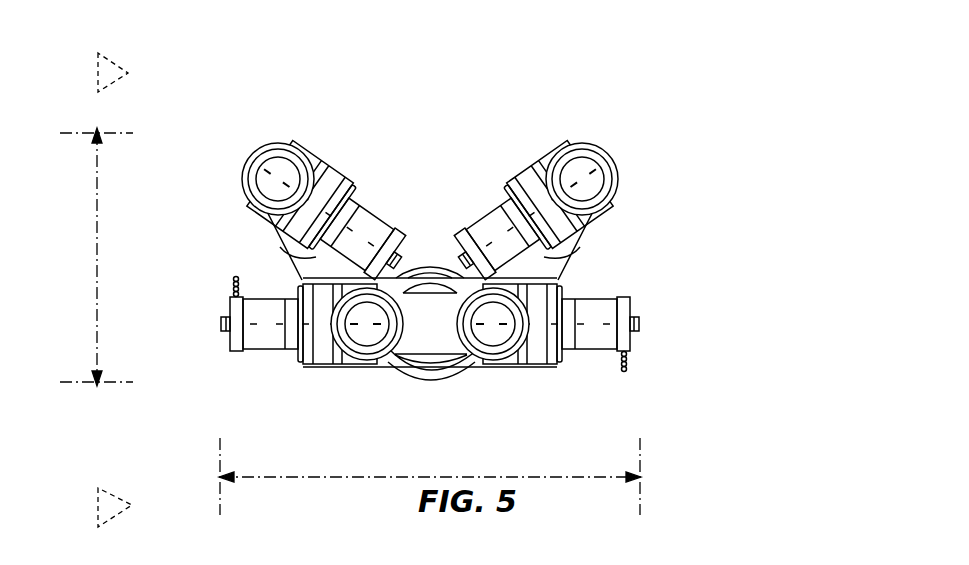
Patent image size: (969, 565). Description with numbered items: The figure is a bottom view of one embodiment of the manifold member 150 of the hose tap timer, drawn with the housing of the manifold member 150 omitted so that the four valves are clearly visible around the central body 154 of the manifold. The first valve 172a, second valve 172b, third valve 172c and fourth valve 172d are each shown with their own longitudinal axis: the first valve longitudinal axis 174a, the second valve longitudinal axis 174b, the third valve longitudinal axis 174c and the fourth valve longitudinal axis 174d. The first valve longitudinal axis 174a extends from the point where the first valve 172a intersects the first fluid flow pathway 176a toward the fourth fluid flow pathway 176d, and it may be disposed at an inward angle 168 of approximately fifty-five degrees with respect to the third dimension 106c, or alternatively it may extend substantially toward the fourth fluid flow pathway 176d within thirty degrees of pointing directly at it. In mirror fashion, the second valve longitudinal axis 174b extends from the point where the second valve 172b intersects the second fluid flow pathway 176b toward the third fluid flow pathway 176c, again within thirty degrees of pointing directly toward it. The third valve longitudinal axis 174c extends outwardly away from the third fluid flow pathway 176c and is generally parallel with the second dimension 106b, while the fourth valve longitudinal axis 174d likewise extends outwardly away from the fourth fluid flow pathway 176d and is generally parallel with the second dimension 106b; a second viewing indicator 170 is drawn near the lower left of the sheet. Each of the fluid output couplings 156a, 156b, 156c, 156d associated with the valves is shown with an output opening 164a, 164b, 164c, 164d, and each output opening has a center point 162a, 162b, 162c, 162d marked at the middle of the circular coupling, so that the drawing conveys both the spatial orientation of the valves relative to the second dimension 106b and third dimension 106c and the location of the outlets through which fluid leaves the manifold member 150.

The manifold member 150 is at (181, 56).
The central hub body 154 is at (440, 373).
The fluid output coupling 156a is at (250, 156).
The fluid output coupling 156b is at (618, 181).
The fluid output coupling 156c is at (347, 351).
The fluid output coupling 156d is at (528, 327).
The center point 162a is at (276, 178).
The center point 162b is at (588, 180).
The center point 162c is at (368, 329).
The center point 162d is at (493, 328).
The output opening 164a is at (282, 165).
The output opening 164b is at (574, 168).
The output opening 164c is at (377, 344).
The output opening 164d is at (507, 339).
The inward angle 168 is at (118, 90).
The viewing direction indicator 170 is at (115, 490).
The first valve 172a is at (320, 183).
The second valve 172b is at (456, 224).
The third valve 172c is at (253, 334).
The fourth valve 172d is at (595, 339).
The first valve longitudinal axis 174a is at (346, 190).
The second valve longitudinal axis 174b is at (490, 224).
The third valve longitudinal axis 174c is at (302, 326).
The fourth valve longitudinal axis 174d is at (619, 313).
The first fluid flow pathway 176a is at (313, 256).
The second fluid flow pathway 176b is at (578, 251).
The third fluid flow pathway 176c is at (302, 280).
The fourth fluid flow pathway 176d is at (560, 279).
The second dimension 106b is at (538, 478).
The third dimension 106c is at (97, 297).